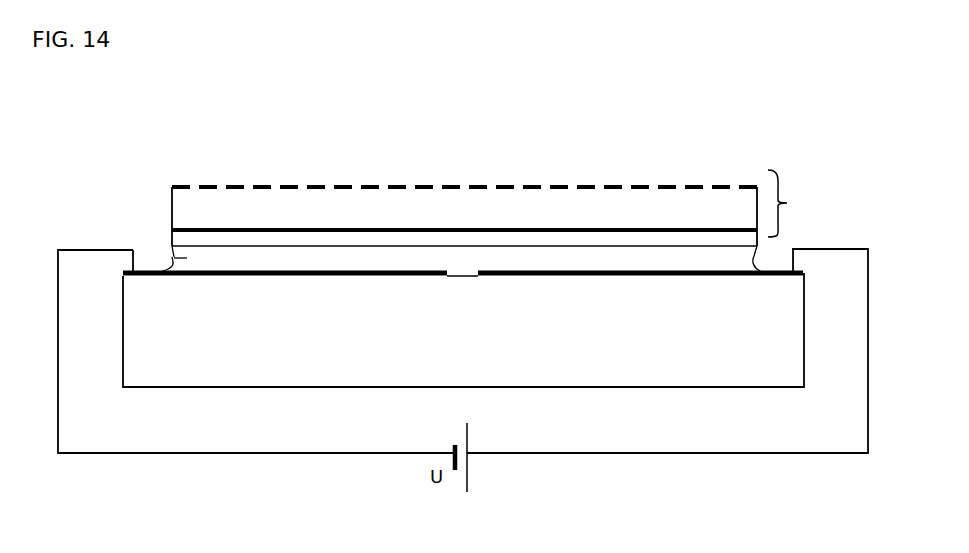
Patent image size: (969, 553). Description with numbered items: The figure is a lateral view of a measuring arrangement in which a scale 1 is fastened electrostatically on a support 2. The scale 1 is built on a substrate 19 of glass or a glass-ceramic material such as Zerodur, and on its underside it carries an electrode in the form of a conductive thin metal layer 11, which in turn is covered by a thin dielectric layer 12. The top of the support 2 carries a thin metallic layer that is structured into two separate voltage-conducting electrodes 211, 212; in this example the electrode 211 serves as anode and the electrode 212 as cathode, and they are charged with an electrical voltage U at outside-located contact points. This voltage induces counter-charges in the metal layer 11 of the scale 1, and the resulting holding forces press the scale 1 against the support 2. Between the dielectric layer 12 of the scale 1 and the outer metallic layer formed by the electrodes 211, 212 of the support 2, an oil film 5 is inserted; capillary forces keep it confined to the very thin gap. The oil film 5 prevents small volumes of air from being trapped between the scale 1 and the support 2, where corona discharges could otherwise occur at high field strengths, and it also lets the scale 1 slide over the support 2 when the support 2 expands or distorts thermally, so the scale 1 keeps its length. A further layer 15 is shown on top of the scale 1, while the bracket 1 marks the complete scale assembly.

The scale 1 is at (485, 184).
The support 2 is at (782, 363).
The oil film 5 is at (187, 258).
The conductive thin metal layer 11 is at (470, 229).
The thin dielectric layer 12 is at (557, 237).
The top cover layer 15 is at (243, 187).
The substrate 19 is at (350, 212).
The electrode 211 is at (268, 278).
The electrode 212 is at (655, 278).